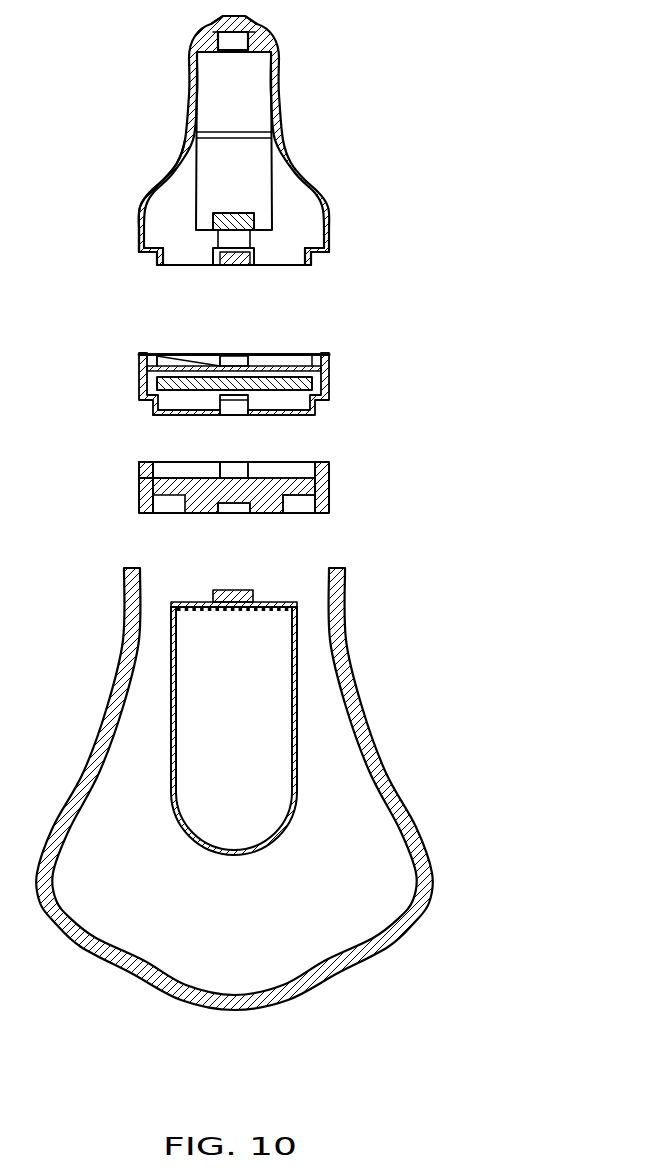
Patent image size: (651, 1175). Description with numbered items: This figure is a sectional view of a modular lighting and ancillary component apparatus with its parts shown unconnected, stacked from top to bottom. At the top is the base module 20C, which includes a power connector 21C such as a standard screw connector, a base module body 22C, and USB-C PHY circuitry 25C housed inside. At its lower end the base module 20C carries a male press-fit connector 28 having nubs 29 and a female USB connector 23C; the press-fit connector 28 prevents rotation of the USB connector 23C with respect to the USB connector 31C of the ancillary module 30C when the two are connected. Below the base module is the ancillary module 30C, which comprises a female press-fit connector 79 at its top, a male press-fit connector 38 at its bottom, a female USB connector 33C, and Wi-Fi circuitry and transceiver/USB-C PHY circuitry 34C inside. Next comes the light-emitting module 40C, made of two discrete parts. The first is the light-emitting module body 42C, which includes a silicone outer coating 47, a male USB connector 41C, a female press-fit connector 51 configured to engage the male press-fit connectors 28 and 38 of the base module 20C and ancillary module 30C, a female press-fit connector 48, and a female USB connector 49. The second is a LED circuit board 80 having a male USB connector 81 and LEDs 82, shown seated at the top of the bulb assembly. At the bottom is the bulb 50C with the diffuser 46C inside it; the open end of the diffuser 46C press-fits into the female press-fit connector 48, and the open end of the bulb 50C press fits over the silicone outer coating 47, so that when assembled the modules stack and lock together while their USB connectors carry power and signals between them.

The base module 20C is at (312, 164).
The power connector 21C is at (283, 62).
The base module body 22C is at (139, 220).
The female USB connector 23C is at (230, 256).
The USB-C PHY circuitry 25C is at (223, 213).
The male press-fit connector 28 is at (300, 266).
The nubs 29 is at (158, 258).
The ancillary module 30C is at (141, 372).
The USB connector 31C is at (249, 366).
The female USB connector 33C is at (240, 412).
The Wi-Fi circuitry and transceiver/USB-C PHY circuitry 34C is at (282, 382).
The male press-fit connector 38 is at (173, 415).
The female press-fit connector 79 is at (184, 358).
The light-emitting module 40C is at (330, 497).
The male USB connector 41C is at (242, 470).
The light-emitting module body 42C is at (203, 505).
The silicone outer coating 47 is at (139, 466).
The female press-fit connector 48 is at (303, 503).
The female USB connector 49 is at (225, 507).
The female press-fit connector 51 is at (172, 470).
The bulb 50C is at (384, 752).
The diffuser 46C is at (297, 792).
The LED circuit board 80 is at (280, 598).
The male USB connector 81 is at (222, 589).
The LEDs 82 is at (207, 625).